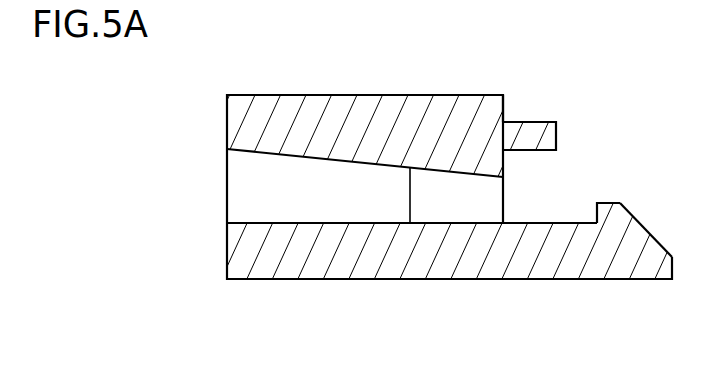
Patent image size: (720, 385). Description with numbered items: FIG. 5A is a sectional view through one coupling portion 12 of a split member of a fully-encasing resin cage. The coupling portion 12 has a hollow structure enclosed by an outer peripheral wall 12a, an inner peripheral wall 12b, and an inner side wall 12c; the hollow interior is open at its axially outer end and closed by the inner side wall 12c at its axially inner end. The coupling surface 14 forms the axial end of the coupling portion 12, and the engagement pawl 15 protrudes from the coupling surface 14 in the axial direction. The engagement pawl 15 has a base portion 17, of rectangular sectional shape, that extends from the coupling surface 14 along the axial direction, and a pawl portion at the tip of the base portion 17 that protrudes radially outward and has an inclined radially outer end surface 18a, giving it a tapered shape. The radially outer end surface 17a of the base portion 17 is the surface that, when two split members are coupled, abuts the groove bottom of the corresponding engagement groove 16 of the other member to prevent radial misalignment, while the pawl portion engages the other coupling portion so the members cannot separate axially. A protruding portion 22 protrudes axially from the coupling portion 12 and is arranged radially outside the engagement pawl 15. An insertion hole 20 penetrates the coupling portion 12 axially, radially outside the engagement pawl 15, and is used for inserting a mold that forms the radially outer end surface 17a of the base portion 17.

The coupling portion 12 is at (272, 85).
The outer peripheral wall 12a is at (330, 102).
The inner peripheral wall 12b is at (344, 270).
The inner side wall 12c is at (449, 208).
The coupling surface 14 is at (510, 103).
The protruding portion 22 is at (540, 122).
The insertion hole 20 is at (483, 194).
The base portion 17 is at (572, 268).
The radially outer end surface 17a is at (556, 223).
The engagement groove 16 is at (623, 195).
The inclined radially outer end surface 18a is at (640, 223).
The engagement pawl 15 is at (630, 280).